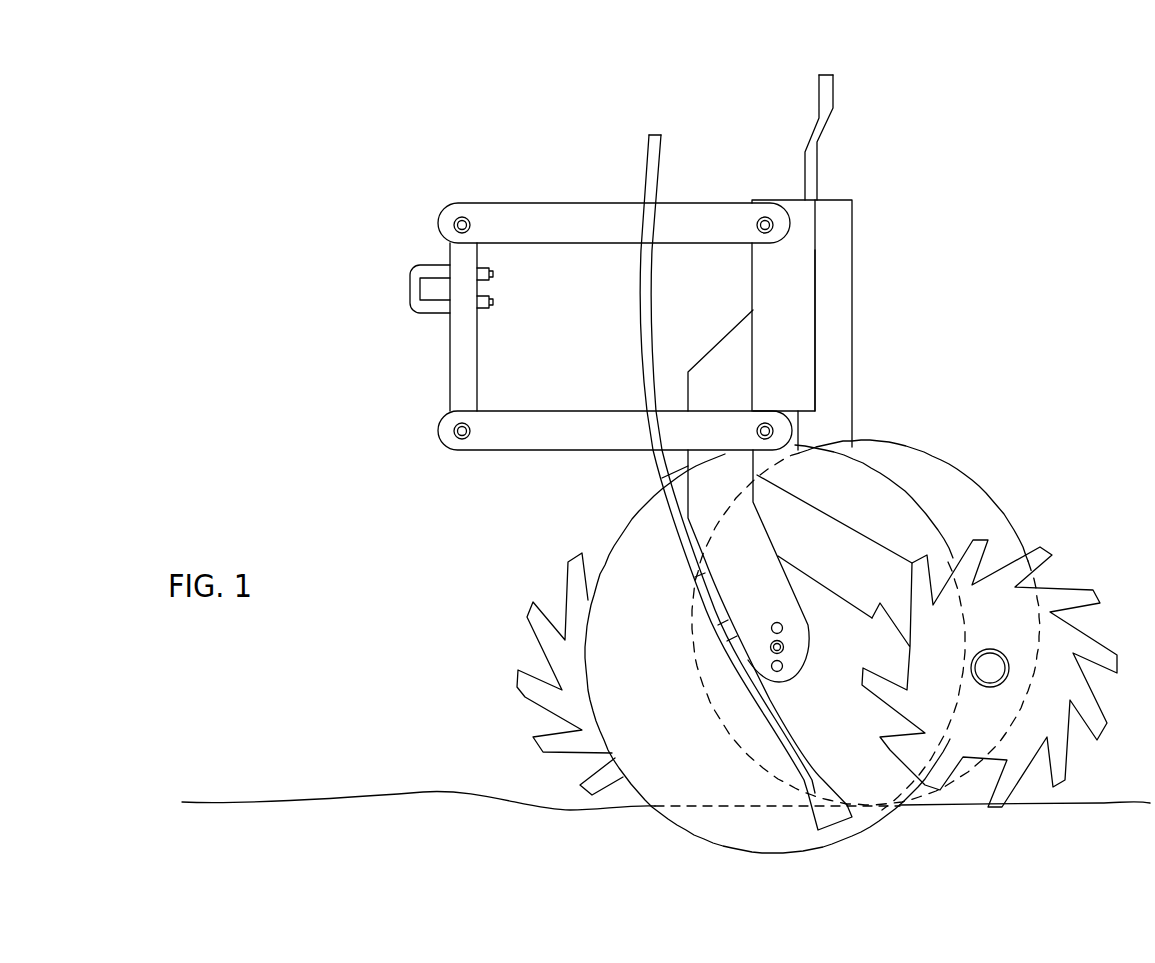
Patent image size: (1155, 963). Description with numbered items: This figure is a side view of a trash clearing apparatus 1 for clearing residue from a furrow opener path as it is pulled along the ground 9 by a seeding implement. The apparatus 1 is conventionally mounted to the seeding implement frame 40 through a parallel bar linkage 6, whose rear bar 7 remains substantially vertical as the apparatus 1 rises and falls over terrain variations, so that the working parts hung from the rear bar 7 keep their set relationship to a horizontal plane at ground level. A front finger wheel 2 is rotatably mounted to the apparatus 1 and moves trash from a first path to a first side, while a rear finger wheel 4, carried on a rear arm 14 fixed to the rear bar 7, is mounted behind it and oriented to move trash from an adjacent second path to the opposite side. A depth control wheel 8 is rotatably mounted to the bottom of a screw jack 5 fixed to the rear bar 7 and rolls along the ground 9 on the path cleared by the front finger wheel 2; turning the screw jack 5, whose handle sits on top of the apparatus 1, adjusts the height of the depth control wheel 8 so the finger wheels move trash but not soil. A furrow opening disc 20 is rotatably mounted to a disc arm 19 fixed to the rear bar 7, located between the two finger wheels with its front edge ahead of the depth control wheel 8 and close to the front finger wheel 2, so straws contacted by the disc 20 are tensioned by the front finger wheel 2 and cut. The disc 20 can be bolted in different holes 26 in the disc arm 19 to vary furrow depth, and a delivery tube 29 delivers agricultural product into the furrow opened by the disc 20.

The trash clearing apparatus 1 is at (890, 141).
The front finger wheel 2 is at (527, 697).
The rear finger wheel 4 is at (1095, 642).
The screw jack 5 is at (852, 218).
The parallel bar linkage 6 is at (590, 203).
The rear bar 7 is at (815, 272).
The depth control wheel 8 is at (960, 472).
The ground 9 is at (300, 806).
The rear arm 14 is at (845, 527).
The disc arm 19 is at (698, 572).
The furrow opening disc 20 is at (630, 516).
The holes 26 is at (792, 628).
The delivery tube 29 is at (663, 142).
The seeding implement frame 40 is at (425, 290).